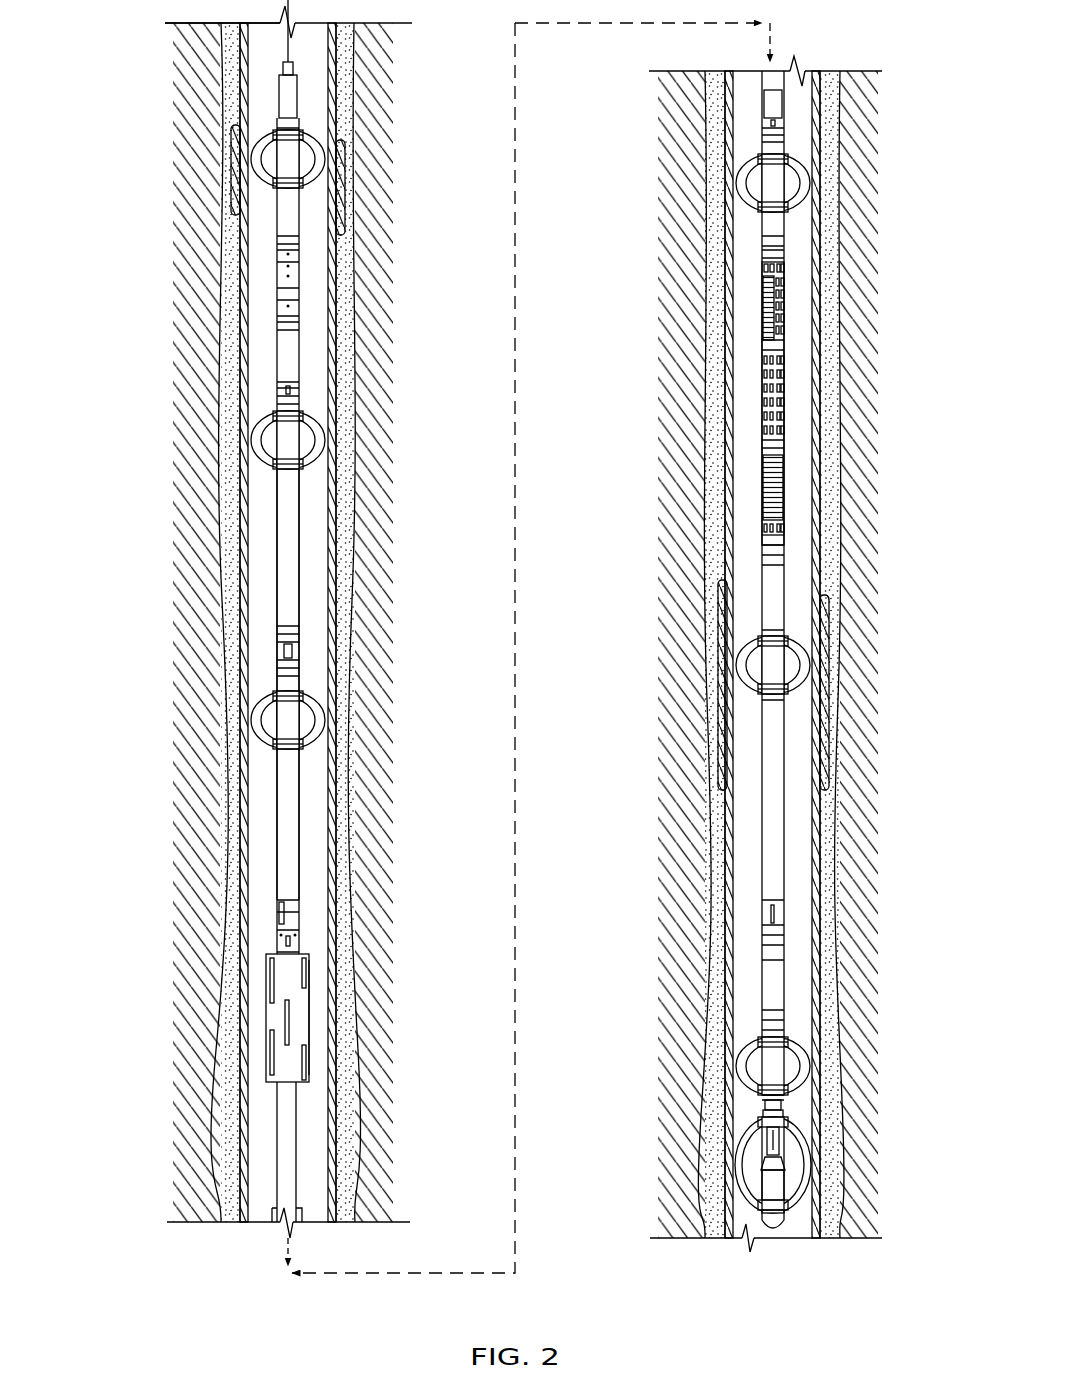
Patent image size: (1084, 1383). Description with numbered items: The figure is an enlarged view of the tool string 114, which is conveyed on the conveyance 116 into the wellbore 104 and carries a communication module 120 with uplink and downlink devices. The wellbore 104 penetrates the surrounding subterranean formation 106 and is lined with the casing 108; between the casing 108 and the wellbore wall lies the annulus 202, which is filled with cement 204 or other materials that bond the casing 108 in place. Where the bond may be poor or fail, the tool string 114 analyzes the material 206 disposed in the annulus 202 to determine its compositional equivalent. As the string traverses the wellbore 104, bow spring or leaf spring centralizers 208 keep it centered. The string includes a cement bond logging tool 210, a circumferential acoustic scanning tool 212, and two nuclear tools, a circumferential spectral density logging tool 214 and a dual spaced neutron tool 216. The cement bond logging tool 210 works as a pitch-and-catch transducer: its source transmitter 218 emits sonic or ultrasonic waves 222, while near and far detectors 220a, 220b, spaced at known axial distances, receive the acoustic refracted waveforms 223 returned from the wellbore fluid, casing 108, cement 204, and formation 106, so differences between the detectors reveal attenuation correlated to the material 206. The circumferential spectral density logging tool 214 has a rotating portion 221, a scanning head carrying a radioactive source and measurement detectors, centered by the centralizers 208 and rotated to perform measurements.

The tool string 114 is at (118, 20).
The conveyance 116 is at (287, 40).
The communication module 120 is at (282, 116).
The wellbore 104 is at (228, 258).
The subterranean formation 106 is at (219, 320).
The casing 108 is at (235, 358).
The annulus 202 is at (226, 522).
The cement 204 is at (222, 573).
The material 206 is at (232, 205).
The centralizer 208 is at (262, 147).
The cement bond logging tool 210 is at (795, 431).
The circumferential acoustic scanning tool 212 is at (793, 1030).
The circumferential spectral density logging tool 214 is at (262, 1053).
The dual spaced neutron tool 216 is at (268, 820).
The source transmitter 218 is at (758, 278).
The near detector 220a is at (762, 418).
The far detector 220b is at (762, 533).
The rotating portion 221 is at (310, 993).
The sonic or ultrasonic waves 222 is at (788, 278).
The acoustic refracted waveforms 223 is at (756, 404).